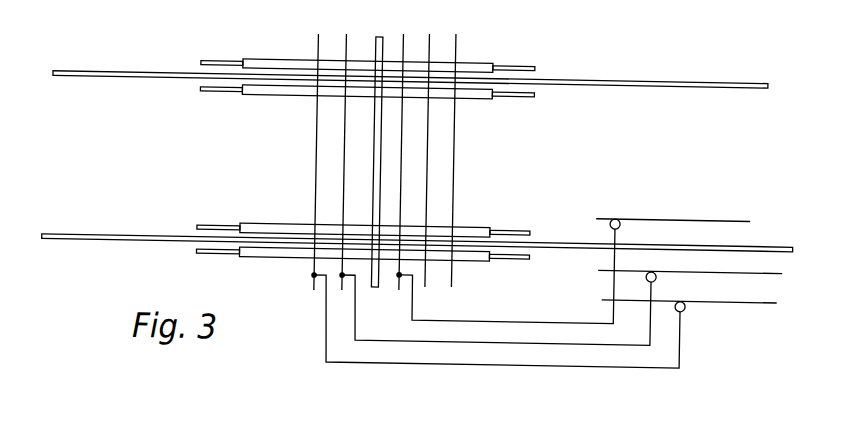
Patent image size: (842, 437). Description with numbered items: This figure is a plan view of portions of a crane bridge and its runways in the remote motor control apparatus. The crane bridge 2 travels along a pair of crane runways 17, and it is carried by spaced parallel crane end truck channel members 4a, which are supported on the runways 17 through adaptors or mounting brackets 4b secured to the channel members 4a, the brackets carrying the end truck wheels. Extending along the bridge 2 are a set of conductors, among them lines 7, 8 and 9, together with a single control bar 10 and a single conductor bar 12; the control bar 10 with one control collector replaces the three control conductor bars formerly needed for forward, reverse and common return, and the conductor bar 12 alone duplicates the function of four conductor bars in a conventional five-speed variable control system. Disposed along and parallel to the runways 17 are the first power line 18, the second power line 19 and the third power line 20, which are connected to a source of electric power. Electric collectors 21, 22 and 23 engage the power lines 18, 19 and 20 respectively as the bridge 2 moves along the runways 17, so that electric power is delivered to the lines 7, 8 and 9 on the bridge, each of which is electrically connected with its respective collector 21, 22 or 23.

The crane bridge 2 is at (386, 37).
The crane end truck channel member 4a is at (491, 54).
The adaptor or mounting bracket 4b is at (529, 88).
The line 7 is at (320, 189).
The line 8 is at (346, 166).
The line 9 is at (404, 182).
The control bar 10 is at (430, 179).
The conductor bar 12 is at (457, 170).
The crane runway 17 is at (99, 79).
The first power line 18 is at (758, 288).
The second power line 19 is at (763, 258).
The third power line 20 is at (662, 207).
The electric collector 21 is at (689, 300).
The electric collector 22 is at (661, 260).
The electric collector 23 is at (628, 185).